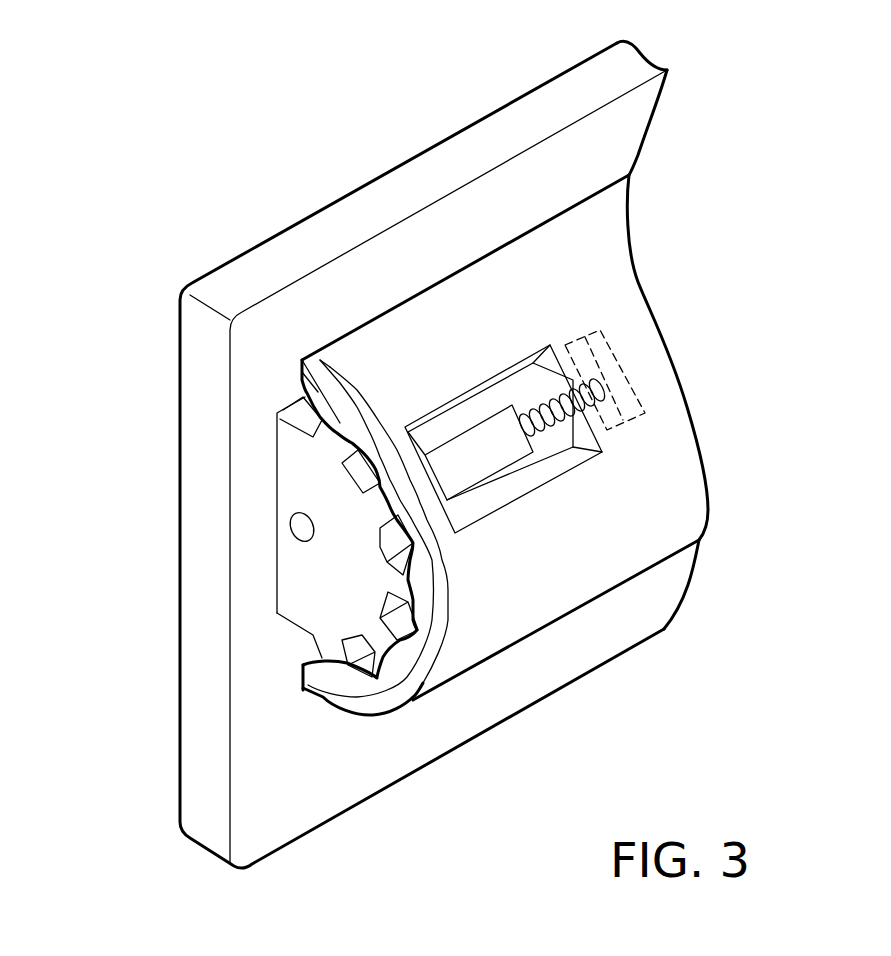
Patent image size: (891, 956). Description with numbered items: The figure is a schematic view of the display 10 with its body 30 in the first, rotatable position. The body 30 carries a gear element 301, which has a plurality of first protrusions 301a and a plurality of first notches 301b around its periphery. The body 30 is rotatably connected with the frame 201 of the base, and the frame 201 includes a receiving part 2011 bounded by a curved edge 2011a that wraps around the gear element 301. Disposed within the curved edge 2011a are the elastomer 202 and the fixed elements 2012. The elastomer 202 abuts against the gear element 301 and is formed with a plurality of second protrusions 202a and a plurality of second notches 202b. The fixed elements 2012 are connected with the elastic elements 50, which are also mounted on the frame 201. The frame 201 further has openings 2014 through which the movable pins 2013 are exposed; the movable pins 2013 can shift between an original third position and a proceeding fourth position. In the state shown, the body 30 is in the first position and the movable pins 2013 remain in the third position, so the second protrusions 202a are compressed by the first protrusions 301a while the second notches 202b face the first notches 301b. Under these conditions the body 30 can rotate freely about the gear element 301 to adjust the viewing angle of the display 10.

The display 10 is at (68, 51).
The body 30 is at (212, 678).
The gear element 301 is at (300, 470).
The first protrusions 301a is at (337, 657).
The first notches 301b is at (370, 683).
The frame 201 is at (670, 482).
The receiving part 2011 is at (427, 655).
The curved edge 2011a is at (407, 690).
The fixed elements 2012 is at (613, 380).
The movable pins 2013 is at (487, 465).
The openings 2014 is at (477, 383).
The elastic elements 50 is at (582, 398).
The elastomer 202 is at (300, 93).
The second protrusions 202a is at (303, 360).
The second notches 202b is at (355, 362).